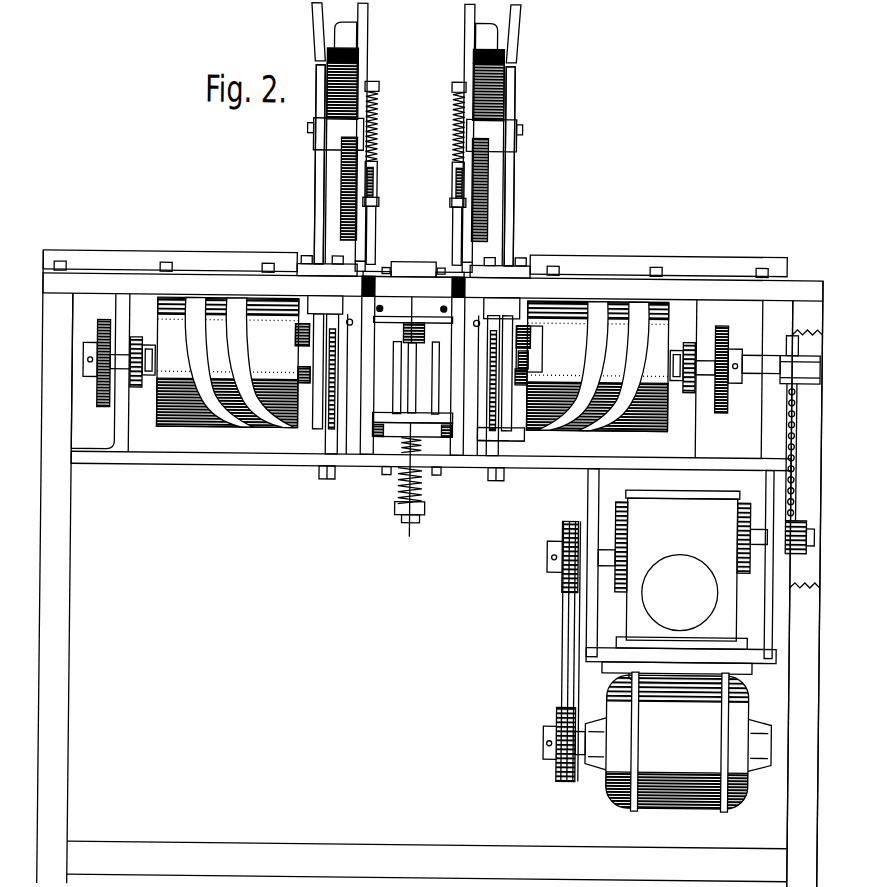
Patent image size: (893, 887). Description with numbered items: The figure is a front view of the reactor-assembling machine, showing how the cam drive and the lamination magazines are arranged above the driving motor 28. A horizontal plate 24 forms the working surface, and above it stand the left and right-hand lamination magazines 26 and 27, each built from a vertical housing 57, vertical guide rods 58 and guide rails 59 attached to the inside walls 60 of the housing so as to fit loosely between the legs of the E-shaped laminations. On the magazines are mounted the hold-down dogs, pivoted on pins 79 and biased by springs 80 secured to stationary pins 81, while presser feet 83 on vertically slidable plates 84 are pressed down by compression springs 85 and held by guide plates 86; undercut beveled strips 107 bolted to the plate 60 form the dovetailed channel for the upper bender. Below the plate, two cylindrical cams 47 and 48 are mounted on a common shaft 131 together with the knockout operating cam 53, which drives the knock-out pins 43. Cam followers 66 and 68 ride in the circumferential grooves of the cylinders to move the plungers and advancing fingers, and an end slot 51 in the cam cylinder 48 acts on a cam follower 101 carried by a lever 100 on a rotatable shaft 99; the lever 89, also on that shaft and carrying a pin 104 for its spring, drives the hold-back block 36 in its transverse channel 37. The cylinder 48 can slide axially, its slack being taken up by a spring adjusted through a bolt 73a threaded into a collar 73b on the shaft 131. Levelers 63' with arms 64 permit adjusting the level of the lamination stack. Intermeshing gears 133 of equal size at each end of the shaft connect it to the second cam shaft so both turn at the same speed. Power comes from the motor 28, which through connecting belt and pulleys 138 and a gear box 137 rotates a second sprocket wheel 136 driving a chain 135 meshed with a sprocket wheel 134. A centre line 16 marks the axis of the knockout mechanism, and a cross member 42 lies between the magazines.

The axis line of cutting unit 16 is at (430, 312).
The horizontal plate 24 is at (89, 285).
The left-hand lamination magazine 26 is at (311, 177).
The right-hand lamination magazine 27 is at (509, 187).
The driving motor 28 is at (615, 798).
The hold-back block 36 is at (437, 284).
The transverse channel 37 is at (354, 284).
The cross member 42 is at (414, 262).
The knock-out pin 43 is at (385, 267).
The cylindrical cam 47 is at (162, 430).
The cylindrical cam 48 is at (661, 418).
The end slot 51 is at (533, 341).
The knockout operating cam 53 is at (401, 330).
The vertical housing 57 is at (314, 154).
The vertical guide rod 58 is at (311, 40).
The guide rail 59 is at (330, 36).
The inside wall 60 is at (357, 78).
The leveler 63' is at (426, 384).
The arm 64 is at (320, 479).
The cam follower 66 is at (221, 297).
The cam follower 68 is at (181, 299).
The bolt 73a is at (298, 332).
The collar 73b is at (499, 363).
The pin 79 is at (354, 262).
The spring 80 is at (320, 265).
The stationary pin 81 is at (320, 273).
The presser foot 83 is at (379, 270).
The vertically slidable plate 84 is at (447, 170).
The compression spring 85 is at (447, 123).
The guide plate 86 is at (444, 210).
The lever 89 is at (361, 381).
The rotatable shaft 99 is at (482, 441).
The lever 100 is at (523, 434).
The cam follower 101 is at (528, 357).
The pin 104 is at (372, 309).
The undercut beveled strip 107 is at (449, 220).
The common shaft 131 is at (753, 352).
The intermeshing gear 133 is at (104, 409).
The sprocket wheel 134 is at (798, 383).
The chain 135 is at (785, 479).
The second sprocket wheel 136 is at (807, 560).
The gear box 137 is at (682, 570).
The connecting belt and pulleys 138 is at (563, 650).